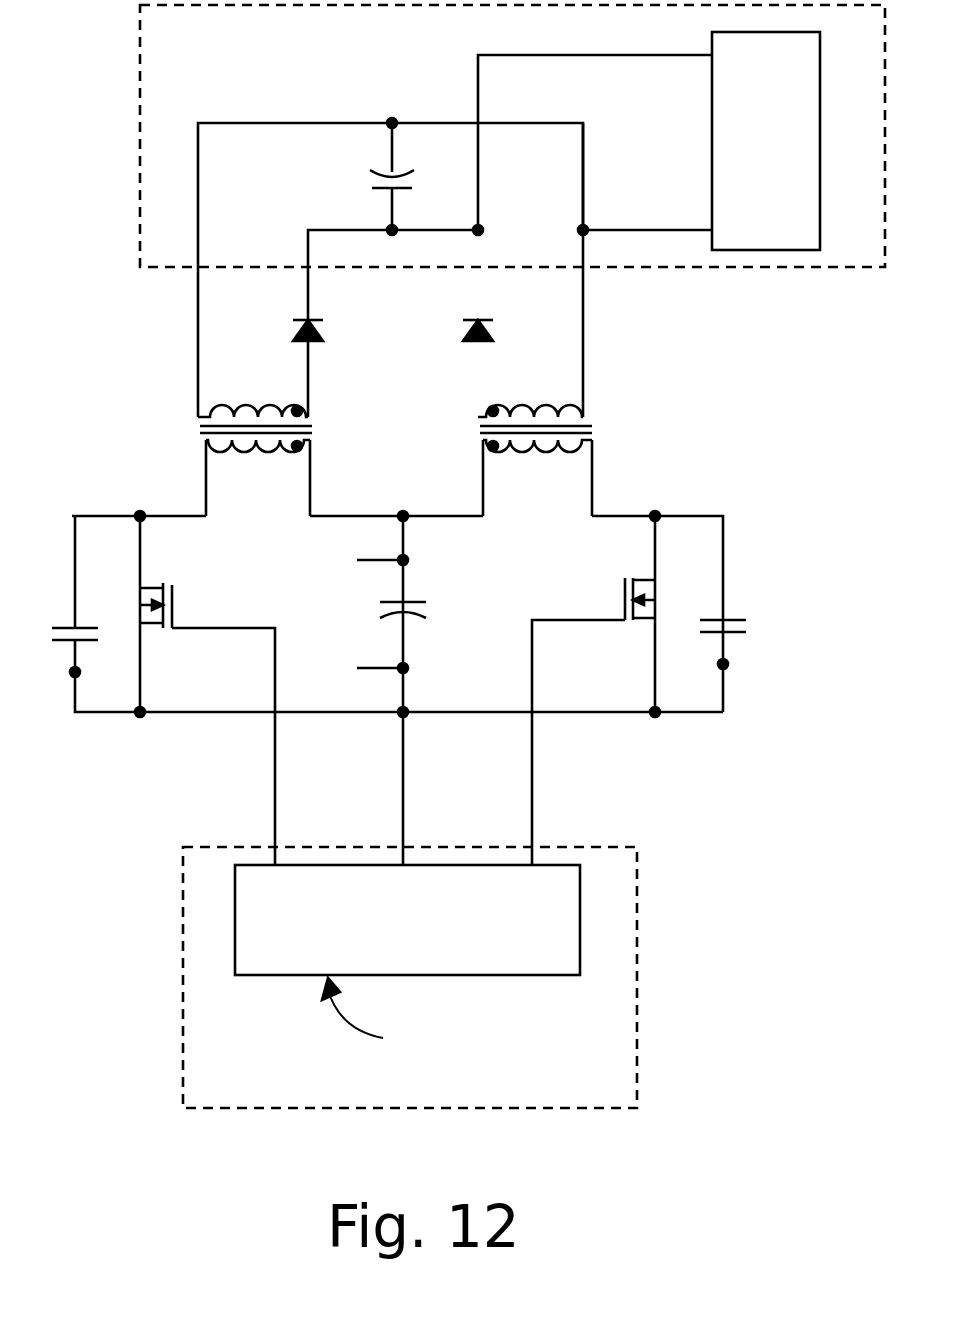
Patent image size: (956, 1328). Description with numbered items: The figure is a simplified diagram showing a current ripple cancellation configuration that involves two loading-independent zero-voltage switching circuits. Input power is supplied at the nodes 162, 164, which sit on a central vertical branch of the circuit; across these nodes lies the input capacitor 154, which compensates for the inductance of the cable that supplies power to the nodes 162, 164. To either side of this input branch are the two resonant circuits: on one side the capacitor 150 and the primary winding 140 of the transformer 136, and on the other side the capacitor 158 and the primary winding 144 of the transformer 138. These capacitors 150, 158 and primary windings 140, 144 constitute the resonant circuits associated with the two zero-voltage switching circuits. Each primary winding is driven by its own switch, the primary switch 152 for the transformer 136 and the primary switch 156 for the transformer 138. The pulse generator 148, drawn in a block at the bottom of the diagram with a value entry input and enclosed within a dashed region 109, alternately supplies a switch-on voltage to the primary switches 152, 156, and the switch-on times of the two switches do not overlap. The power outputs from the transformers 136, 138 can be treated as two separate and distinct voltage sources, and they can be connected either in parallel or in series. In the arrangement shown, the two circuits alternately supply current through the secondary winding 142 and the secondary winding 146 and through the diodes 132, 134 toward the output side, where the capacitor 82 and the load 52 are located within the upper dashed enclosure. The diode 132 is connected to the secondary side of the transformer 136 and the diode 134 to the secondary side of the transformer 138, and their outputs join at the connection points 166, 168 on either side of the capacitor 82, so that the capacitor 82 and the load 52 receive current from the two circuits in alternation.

The load 52 is at (784, 164).
The capacitor 82 is at (380, 172).
The value entry unit 109 is at (640, 932).
The diode 132 is at (295, 338).
The diode 134 is at (495, 336).
The transformer 136 is at (200, 430).
The transformer 138 is at (592, 430).
The primary winding 140 is at (256, 448).
The secondary winding 142 is at (252, 410).
The primary winding 144 is at (546, 448).
The secondary winding 146 is at (544, 410).
The pulse generator 148 is at (420, 928).
The capacitor 150 is at (58, 642).
The primary switch 152 is at (176, 604).
The input capacitor 154 is at (428, 610).
The primary switch 156 is at (620, 598).
The capacitor 158 is at (748, 630).
The node 162 is at (405, 560).
The node 164 is at (405, 712).
The node 166 is at (392, 123).
The node 168 is at (392, 230).